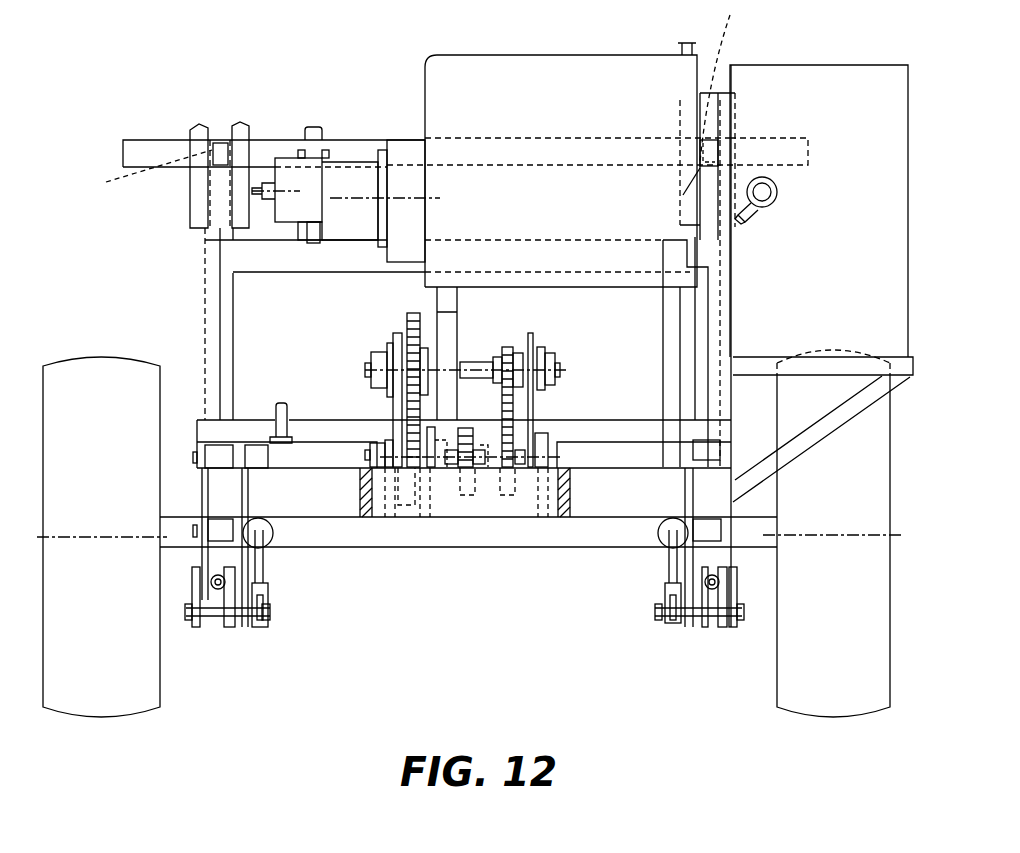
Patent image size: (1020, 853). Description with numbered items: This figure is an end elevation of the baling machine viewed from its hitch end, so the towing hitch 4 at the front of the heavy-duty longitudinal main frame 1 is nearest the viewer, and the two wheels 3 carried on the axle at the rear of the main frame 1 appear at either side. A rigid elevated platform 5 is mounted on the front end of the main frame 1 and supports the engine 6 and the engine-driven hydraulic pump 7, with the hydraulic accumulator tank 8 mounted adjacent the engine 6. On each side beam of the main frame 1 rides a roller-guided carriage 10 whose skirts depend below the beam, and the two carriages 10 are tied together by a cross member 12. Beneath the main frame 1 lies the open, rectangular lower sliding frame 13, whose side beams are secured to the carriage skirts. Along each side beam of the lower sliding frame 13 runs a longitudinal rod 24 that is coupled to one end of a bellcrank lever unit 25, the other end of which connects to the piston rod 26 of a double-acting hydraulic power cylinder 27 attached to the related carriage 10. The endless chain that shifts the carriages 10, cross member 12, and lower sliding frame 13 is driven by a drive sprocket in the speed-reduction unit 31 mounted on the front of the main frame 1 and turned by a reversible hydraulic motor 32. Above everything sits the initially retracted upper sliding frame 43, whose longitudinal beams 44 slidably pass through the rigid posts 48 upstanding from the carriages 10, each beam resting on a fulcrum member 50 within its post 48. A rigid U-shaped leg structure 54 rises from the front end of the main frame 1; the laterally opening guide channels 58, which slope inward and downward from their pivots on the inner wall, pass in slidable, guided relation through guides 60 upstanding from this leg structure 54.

The main frame 1 is at (497, 518).
The wheels 3 is at (100, 368).
The towing hitch 4 is at (345, 520).
The elevated platform 5 is at (665, 311).
The engine 6 is at (540, 72).
The hydraulic pump 7 is at (362, 168).
The hydraulic accumulator tank 8 is at (785, 73).
The roller-guided carriage 10 is at (188, 203).
The cross member 12 is at (238, 425).
The lower sliding frame 13 is at (302, 420).
The longitudinal rod 24 is at (220, 592).
The bellcrank lever unit 25 is at (212, 622).
The piston rod 26 is at (266, 565).
The double-acting hydraulic power cylinder 27 is at (270, 541).
The speed-reduction unit 31 is at (478, 342).
The reversible hydraulic motor 32 is at (315, 450).
The upper sliding frame 43 is at (170, 140).
The longitudinal beams 44 is at (442, 98).
The rigid post 48 is at (243, 125).
The fulcrum member 50 is at (222, 168).
The U-shaped leg structure 54 is at (210, 308).
The guide channels 58 is at (312, 243).
The guides 60 is at (326, 149).